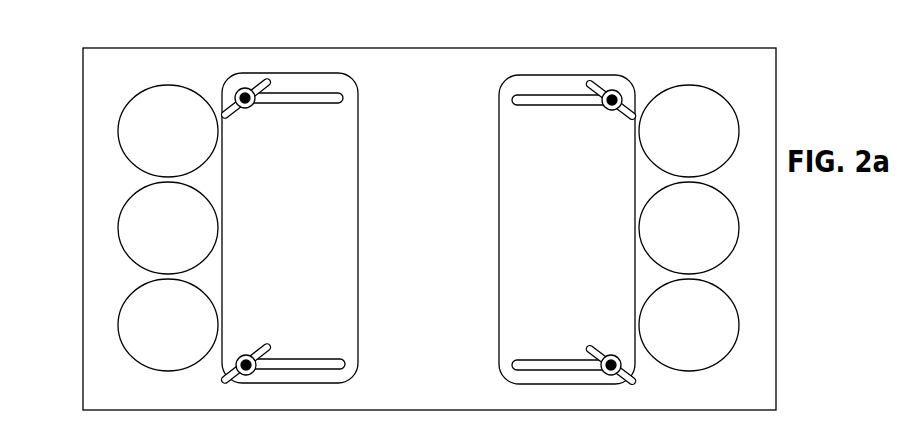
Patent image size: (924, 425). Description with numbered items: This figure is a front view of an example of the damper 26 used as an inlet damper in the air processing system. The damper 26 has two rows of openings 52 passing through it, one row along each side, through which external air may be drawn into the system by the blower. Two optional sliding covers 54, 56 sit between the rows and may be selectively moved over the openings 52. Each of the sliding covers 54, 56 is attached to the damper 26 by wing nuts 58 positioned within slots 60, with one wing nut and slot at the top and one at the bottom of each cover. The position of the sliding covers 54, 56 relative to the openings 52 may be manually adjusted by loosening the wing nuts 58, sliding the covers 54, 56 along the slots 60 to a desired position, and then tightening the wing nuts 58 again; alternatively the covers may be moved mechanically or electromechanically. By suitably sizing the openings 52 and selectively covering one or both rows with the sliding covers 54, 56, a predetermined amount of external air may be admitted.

The damper 26 is at (73, 215).
The openings 52 is at (123, 90).
The sliding cover 54 is at (367, 181).
The sliding cover 56 is at (488, 228).
The wing nuts 58 is at (254, 79).
The slots 60 is at (284, 116).